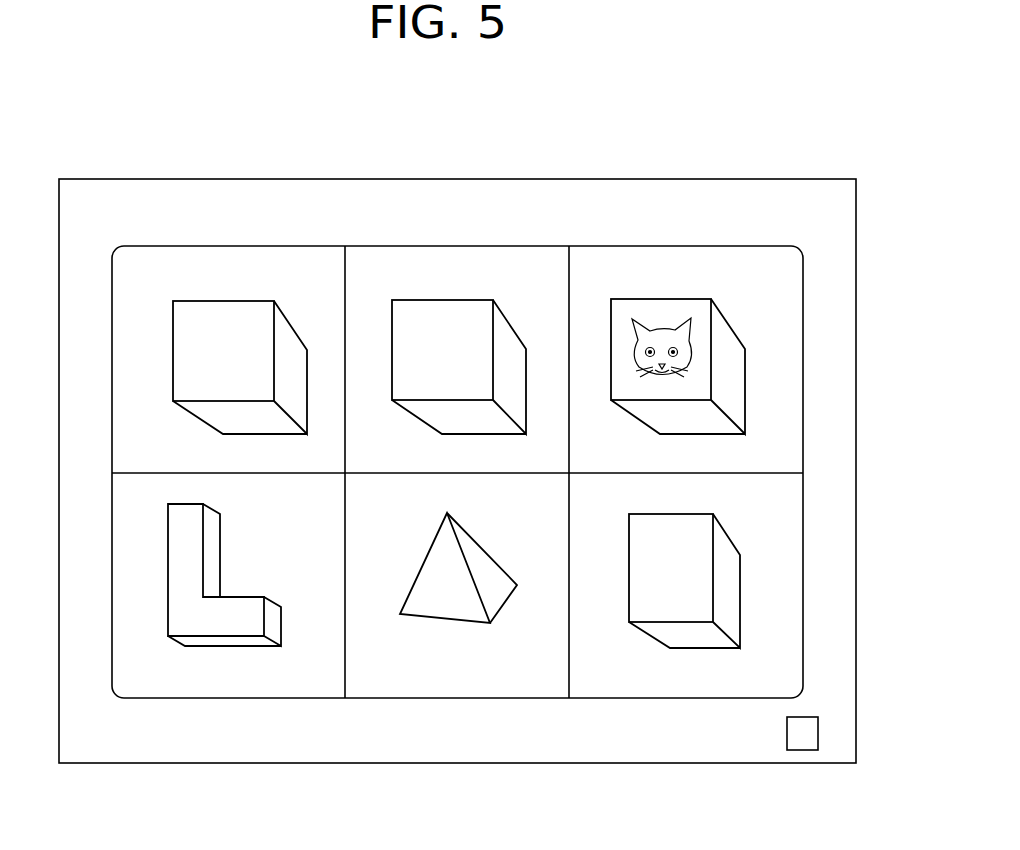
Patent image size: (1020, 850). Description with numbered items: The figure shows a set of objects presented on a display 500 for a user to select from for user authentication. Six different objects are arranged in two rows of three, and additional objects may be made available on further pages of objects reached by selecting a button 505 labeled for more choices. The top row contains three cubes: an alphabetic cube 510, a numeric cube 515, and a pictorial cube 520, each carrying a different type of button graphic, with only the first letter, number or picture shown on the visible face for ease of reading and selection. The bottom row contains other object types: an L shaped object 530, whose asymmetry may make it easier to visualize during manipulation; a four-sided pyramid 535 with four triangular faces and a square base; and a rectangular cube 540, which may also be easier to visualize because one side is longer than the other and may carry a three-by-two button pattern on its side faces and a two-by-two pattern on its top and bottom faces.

The display 500 is at (583, 179).
The button 505 is at (800, 750).
The alphabetic cube 510 is at (333, 287).
The numeric cube 515 is at (551, 287).
The pictorial cube 520 is at (781, 287).
The L shaped object 530 is at (333, 516).
The four-sided pyramid 535 is at (554, 514).
The rectangular cube 540 is at (787, 516).